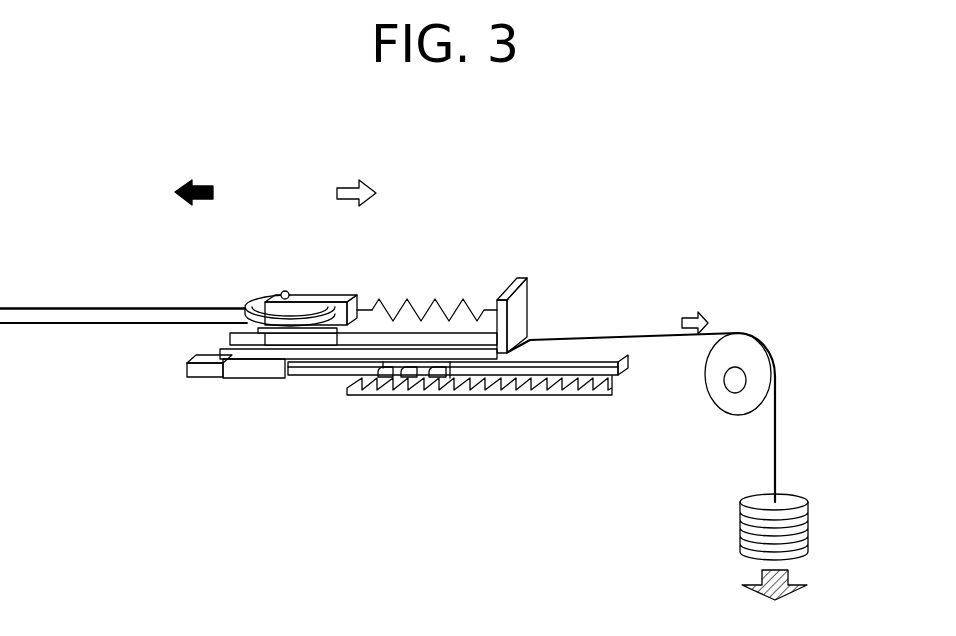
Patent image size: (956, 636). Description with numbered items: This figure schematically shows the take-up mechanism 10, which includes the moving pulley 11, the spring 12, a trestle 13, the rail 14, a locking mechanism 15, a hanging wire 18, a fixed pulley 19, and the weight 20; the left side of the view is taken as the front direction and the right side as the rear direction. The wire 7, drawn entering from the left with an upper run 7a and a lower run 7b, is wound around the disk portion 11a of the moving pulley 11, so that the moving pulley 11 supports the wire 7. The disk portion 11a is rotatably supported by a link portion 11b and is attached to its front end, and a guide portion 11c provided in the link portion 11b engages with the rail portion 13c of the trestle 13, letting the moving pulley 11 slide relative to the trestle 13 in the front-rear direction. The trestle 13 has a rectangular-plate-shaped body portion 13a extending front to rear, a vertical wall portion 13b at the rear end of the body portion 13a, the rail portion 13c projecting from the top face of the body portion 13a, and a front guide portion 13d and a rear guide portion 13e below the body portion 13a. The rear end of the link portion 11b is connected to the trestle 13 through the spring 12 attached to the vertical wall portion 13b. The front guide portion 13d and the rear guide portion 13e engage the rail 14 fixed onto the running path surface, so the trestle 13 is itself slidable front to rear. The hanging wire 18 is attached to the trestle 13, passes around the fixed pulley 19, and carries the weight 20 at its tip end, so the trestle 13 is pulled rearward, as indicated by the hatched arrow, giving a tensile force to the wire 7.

The wire 7 is at (186, 322).
The upper wire portion 7a is at (84, 307).
The lower wire portion 7b is at (58, 326).
The take-up mechanism 10 is at (507, 243).
The moving pulley 11 is at (314, 243).
The disk portion 11a is at (260, 298).
The link portion 11b is at (346, 300).
The guide portion 11c is at (273, 340).
The spring 12 is at (445, 300).
The trestle 13 is at (356, 350).
The body portion 13a is at (204, 366).
The vertical wall portion 13b is at (525, 277).
The rail portion 13c is at (232, 336).
The front guide portion 13d is at (243, 371).
The rear guide portion 13e is at (490, 385).
The rail 14 is at (309, 370).
The locking mechanism 15 is at (448, 396).
The hanging wire 18 is at (640, 332).
The fixed pulley 19 is at (756, 358).
The weight 20 is at (810, 518).